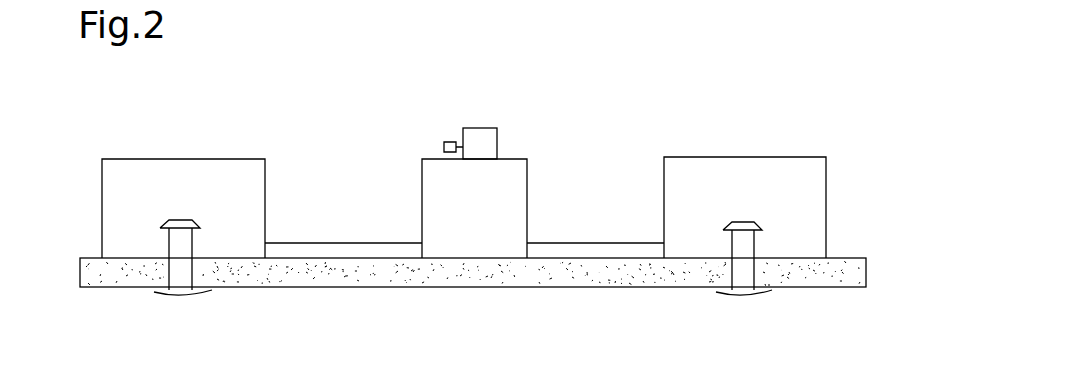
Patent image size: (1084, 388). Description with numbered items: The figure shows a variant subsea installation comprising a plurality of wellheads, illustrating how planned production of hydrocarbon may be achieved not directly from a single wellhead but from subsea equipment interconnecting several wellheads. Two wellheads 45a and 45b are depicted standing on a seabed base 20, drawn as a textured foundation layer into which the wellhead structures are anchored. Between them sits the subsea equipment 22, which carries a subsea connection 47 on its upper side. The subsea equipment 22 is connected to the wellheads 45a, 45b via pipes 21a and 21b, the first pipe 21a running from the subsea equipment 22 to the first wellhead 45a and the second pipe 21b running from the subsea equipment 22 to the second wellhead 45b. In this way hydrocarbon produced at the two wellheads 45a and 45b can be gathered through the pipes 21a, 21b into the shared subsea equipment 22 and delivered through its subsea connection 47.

The base plate 20 is at (473, 272).
The wellhead 45a is at (105, 123).
The wellhead 45b is at (711, 142).
The subsea equipment 22 is at (423, 149).
The subsea connection 47 is at (497, 152).
The pipe 21a is at (325, 247).
The pipe 21b is at (578, 247).